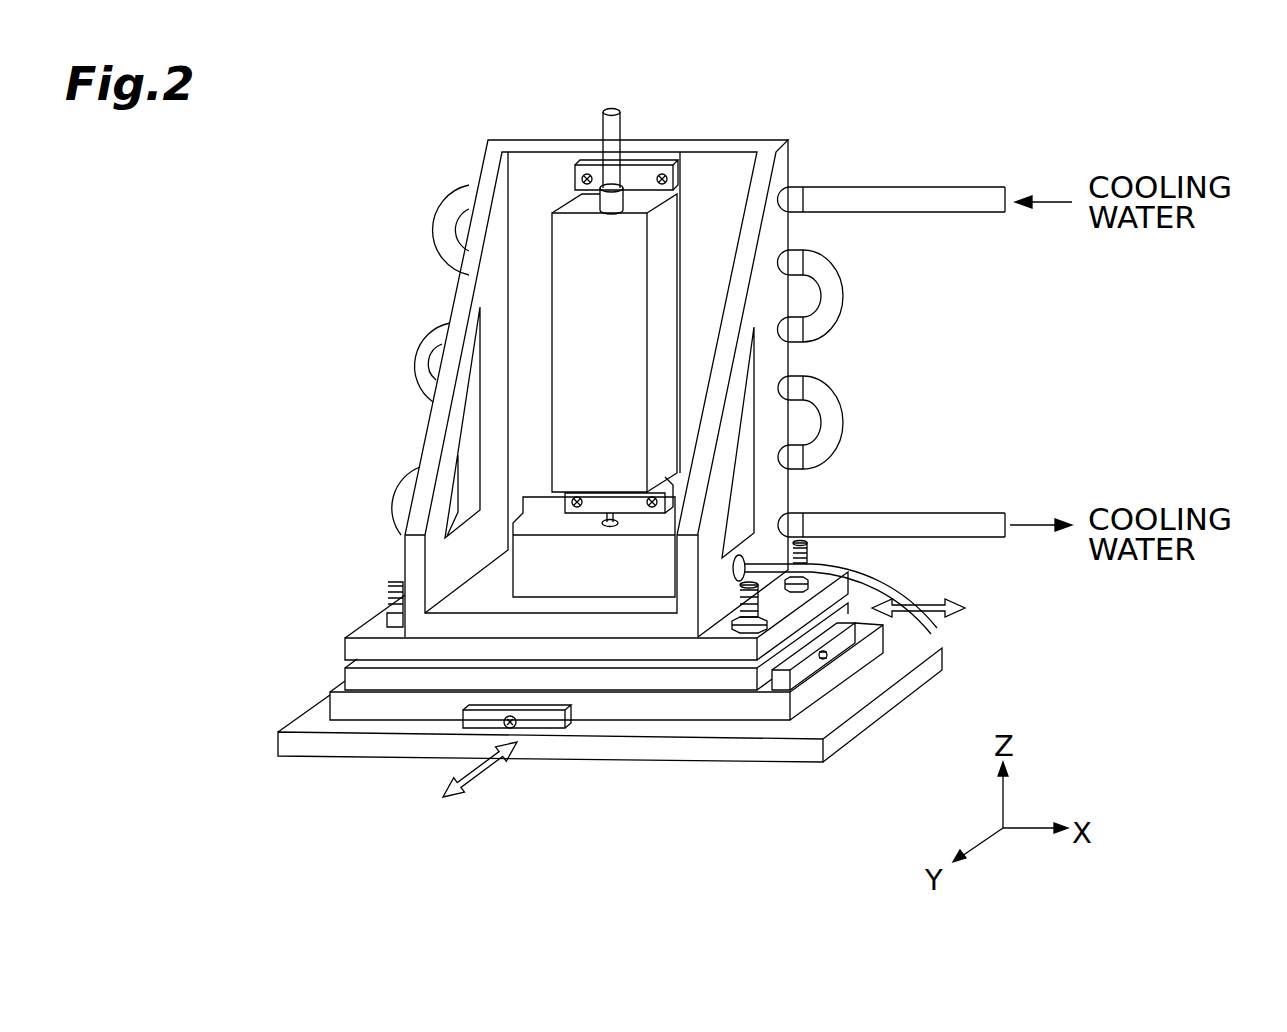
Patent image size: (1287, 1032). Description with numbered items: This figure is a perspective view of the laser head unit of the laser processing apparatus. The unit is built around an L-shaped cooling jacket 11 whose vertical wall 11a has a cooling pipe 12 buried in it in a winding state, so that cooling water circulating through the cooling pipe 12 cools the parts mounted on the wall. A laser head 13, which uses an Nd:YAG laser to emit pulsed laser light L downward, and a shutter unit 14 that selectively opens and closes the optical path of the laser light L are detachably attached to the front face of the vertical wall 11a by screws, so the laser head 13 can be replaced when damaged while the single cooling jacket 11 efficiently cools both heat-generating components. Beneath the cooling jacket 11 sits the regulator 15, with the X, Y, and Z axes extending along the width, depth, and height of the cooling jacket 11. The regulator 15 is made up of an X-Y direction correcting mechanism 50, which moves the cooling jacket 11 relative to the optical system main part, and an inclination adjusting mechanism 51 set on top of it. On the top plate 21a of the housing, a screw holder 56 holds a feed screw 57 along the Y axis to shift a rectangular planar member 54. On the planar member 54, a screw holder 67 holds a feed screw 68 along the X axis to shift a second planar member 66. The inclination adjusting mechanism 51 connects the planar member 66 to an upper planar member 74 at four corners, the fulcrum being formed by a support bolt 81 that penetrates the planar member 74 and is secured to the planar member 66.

The cooling jacket 11 is at (500, 148).
The vertical wall 11a is at (735, 178).
The cooling pipe 12 is at (395, 495).
The laser head 13 is at (635, 232).
The shutter unit 14 is at (523, 570).
The regulator 15 is at (143, 588).
The X-Y direction correcting mechanism 50 is at (556, 722).
The inclination adjusting mechanism 51 is at (502, 631).
The planar member 54 is at (335, 712).
The screw holder 56 is at (480, 723).
The feed screw 57 is at (518, 727).
The planar member 66 is at (347, 680).
The screw holder 67 is at (800, 670).
The feed screw 68 is at (828, 655).
The planar member 74 is at (347, 650).
The support bolt 81 is at (812, 553).
The top plate 21a is at (788, 732).
The laser light L is at (604, 521).